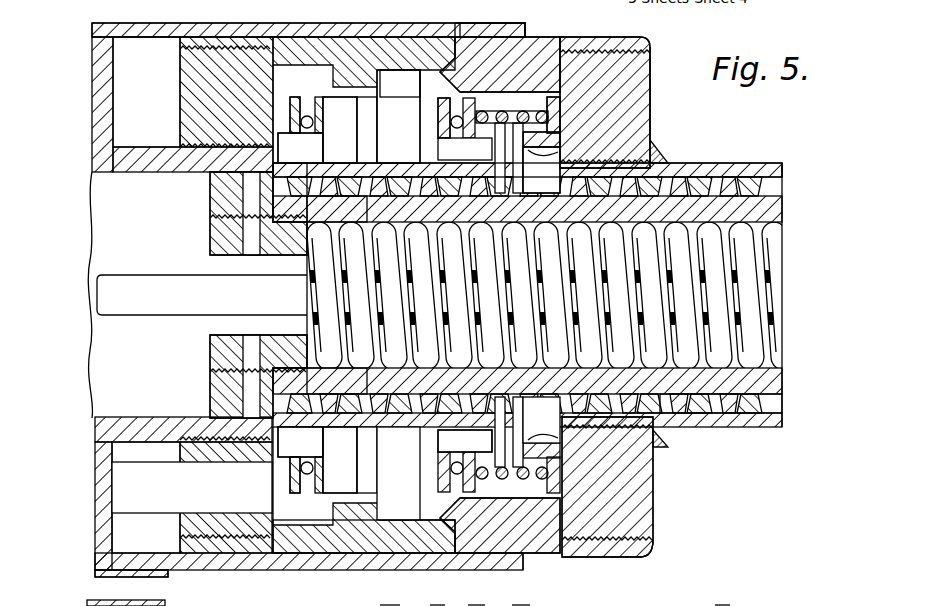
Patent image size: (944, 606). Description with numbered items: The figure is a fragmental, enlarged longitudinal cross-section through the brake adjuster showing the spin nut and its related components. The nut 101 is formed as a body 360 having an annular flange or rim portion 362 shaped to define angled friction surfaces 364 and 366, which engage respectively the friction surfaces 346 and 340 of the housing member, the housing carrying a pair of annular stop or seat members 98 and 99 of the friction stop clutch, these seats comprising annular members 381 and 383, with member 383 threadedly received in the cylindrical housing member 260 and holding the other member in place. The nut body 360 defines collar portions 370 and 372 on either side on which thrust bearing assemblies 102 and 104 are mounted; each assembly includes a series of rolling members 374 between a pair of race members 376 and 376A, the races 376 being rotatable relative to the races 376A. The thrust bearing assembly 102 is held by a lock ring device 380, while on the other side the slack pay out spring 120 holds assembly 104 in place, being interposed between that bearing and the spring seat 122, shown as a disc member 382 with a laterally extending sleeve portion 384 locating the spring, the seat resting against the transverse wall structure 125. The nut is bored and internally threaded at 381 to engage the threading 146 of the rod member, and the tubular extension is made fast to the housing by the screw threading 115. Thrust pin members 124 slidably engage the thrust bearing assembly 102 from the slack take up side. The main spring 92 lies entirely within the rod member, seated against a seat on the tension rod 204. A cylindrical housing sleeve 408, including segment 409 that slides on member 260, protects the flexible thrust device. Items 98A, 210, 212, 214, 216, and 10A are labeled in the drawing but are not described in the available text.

The main spring 92 is at (762, 300).
The annular stop or seat member 98 is at (348, 58).
The housing section 98A is at (398, 597).
The annular stop or seat member 99 is at (560, 70).
The nut 101 is at (415, 486).
The thrust bearing assembly 102 is at (285, 111).
The thrust bearing assembly 104 is at (483, 100).
The screw threading 115 is at (220, 222).
The slack pay out spring 120 is at (515, 108).
The spring seat 122 is at (555, 128).
The thrust pin members 124 is at (207, 500).
The transverse wall structure 125 is at (652, 85).
The threading 146 is at (716, 410).
The tension rod 204 is at (138, 305).
The plate 210 is at (430, 605).
The plate 212 is at (515, 605).
The bracket 214 is at (282, 605).
The spacer 216 is at (470, 605).
The cylindrical housing member 260 is at (642, 558).
The friction surface 340 is at (400, 72).
The friction surface 346 is at (443, 78).
The nut body 360 is at (340, 140).
The annular flange or rim portion 362 is at (478, 68).
The angled friction surface 364 is at (440, 72).
The angled friction surface 366 is at (367, 80).
The collar portion 370 is at (462, 192).
The collar portion 372 is at (313, 157).
The rolling members 374 is at (293, 473).
The race member 376 is at (293, 488).
The race member 376A is at (276, 522).
The lock ring device 380 is at (286, 137).
The internal threading 381 is at (365, 196).
The disc member 382 is at (555, 113).
The annular member 383 is at (580, 517).
The sleeve portion 384 is at (555, 143).
The cylindrical housing sleeve 408 is at (95, 574).
The tubular segment 409 is at (523, 560).
The assembly 10A is at (720, 605).